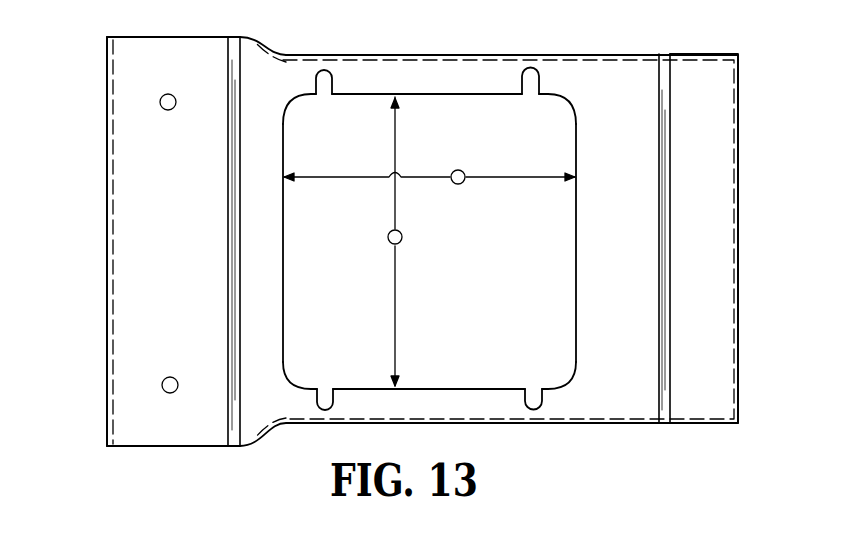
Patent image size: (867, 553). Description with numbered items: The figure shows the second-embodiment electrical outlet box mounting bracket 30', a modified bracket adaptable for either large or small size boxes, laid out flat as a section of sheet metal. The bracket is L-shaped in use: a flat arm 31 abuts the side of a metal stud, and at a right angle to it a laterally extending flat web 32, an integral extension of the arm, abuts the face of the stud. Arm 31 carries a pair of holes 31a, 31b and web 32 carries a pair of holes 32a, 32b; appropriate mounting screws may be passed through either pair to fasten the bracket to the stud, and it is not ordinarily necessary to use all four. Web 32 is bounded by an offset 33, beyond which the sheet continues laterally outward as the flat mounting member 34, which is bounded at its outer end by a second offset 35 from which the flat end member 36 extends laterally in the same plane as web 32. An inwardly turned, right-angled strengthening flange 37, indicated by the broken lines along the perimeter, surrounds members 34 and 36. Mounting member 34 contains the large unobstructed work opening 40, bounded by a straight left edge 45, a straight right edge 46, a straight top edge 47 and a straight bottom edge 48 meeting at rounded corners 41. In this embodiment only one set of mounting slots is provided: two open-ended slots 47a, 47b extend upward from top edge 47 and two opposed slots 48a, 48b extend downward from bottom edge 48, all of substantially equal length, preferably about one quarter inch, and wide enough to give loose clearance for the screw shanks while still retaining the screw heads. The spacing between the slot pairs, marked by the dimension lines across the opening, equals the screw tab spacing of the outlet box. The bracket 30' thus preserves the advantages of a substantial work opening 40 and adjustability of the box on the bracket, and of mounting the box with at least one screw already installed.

The bracket 30' is at (419, 233).
The flat arm 31 is at (113, 44).
The hole 31a is at (108, 104).
The hole 31b is at (108, 378).
The flat web 32 is at (199, 16).
The hole 32a is at (168, 111).
The hole 32b is at (176, 356).
The offset 33 is at (232, 62).
The flat mounting member 34 is at (430, 73).
The offset 35 is at (662, 230).
The flat end member 36 is at (715, 212).
The strengthening flange 37 is at (487, 58).
The opening 40 is at (337, 283).
The rounded corners of opening 41 is at (292, 120).
The straight left edge 45 is at (284, 240).
The straight right edge 46 is at (575, 218).
The straight top edge 47 is at (443, 96).
The slot 47a is at (326, 96).
The slot 47b is at (533, 96).
The straight bottom edge 48 is at (427, 388).
The slot 48a is at (333, 401).
The slot 48b is at (525, 401).